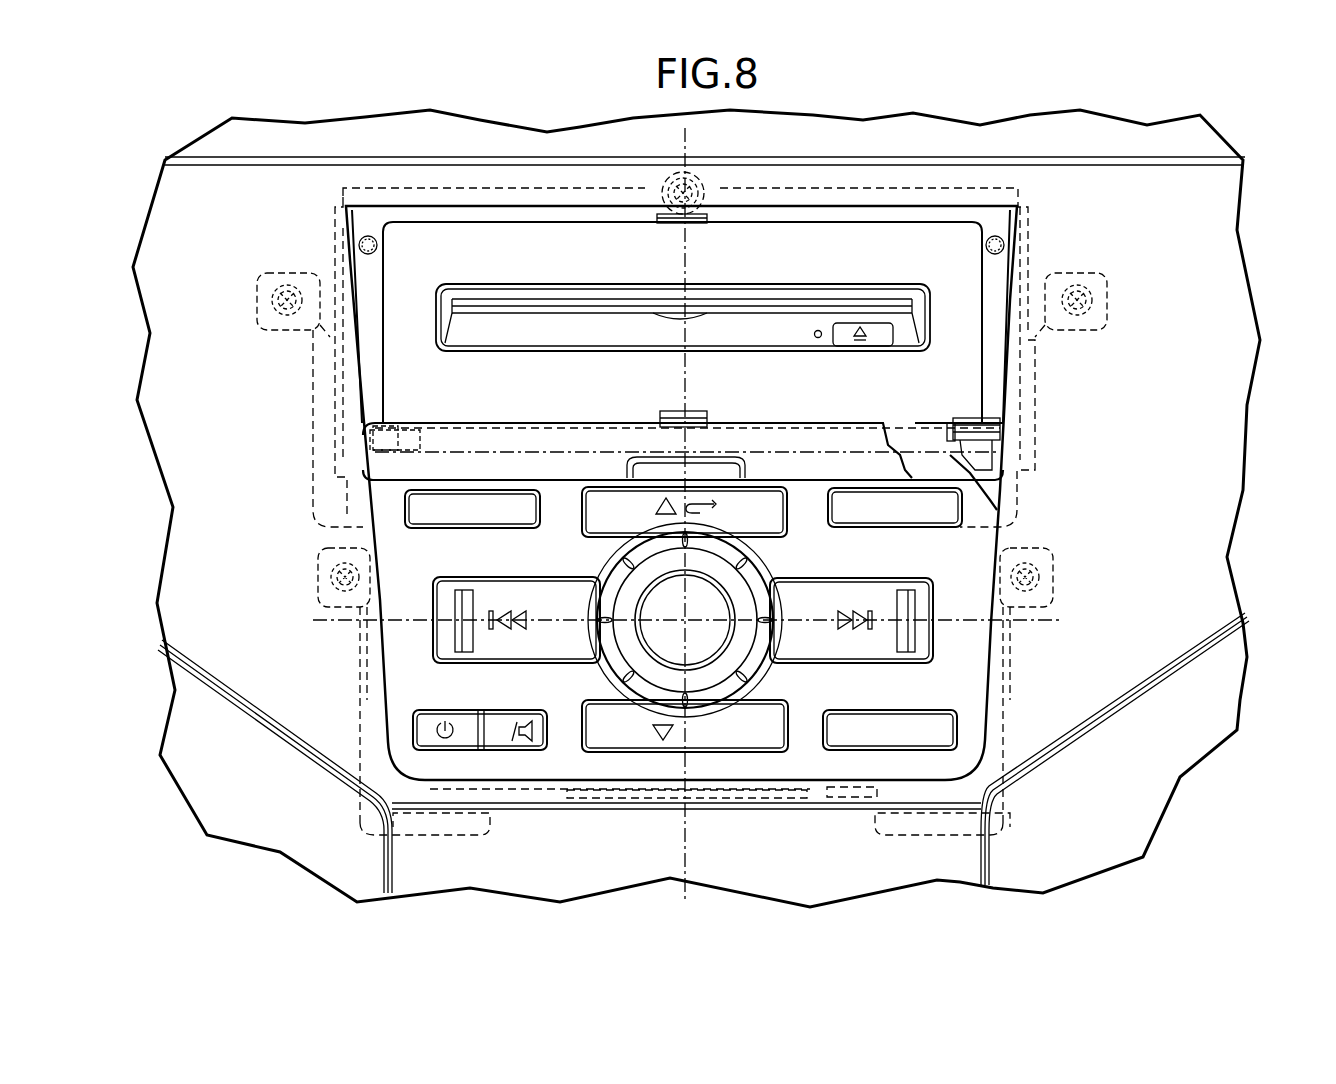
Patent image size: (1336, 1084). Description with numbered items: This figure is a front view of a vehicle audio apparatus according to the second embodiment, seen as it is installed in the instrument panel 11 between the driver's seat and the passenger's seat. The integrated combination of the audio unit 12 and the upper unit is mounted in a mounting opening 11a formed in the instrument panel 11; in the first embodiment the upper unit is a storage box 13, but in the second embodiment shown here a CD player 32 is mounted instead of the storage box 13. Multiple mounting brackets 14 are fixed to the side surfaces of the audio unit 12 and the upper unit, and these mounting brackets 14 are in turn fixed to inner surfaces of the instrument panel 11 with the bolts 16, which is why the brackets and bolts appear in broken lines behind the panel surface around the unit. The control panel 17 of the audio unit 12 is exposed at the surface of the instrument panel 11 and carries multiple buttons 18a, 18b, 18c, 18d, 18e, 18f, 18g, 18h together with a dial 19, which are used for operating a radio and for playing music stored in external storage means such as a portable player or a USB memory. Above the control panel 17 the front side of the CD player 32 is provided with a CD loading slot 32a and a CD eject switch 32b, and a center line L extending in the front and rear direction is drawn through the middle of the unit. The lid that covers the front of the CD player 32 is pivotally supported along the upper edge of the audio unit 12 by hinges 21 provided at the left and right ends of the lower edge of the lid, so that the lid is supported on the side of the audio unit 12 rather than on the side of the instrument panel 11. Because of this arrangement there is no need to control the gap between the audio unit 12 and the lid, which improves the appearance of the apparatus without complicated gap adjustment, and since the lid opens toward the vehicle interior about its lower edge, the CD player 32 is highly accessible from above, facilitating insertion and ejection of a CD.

The instrument panel 11 is at (1094, 180).
The mounting opening 11a is at (1000, 567).
The audio unit 12 is at (993, 637).
The storage box 13 is at (1015, 370).
The mounting bracket 14 is at (648, 190).
The bolt 16 is at (700, 192).
The control panel 17 is at (824, 563).
The button 18a is at (517, 498).
The button 18b is at (618, 508).
The button 18c is at (890, 492).
The button 18d is at (530, 593).
The button 18e is at (843, 590).
The button 18f is at (502, 718).
The button 18g is at (772, 712).
The button 18h is at (877, 715).
The dial 19 is at (632, 653).
The hinge 21 is at (398, 418).
The CD player 32 is at (682, 251).
The CD loading slot 32a is at (573, 300).
The CD eject switch 32b is at (873, 338).
The center line L is at (687, 267).